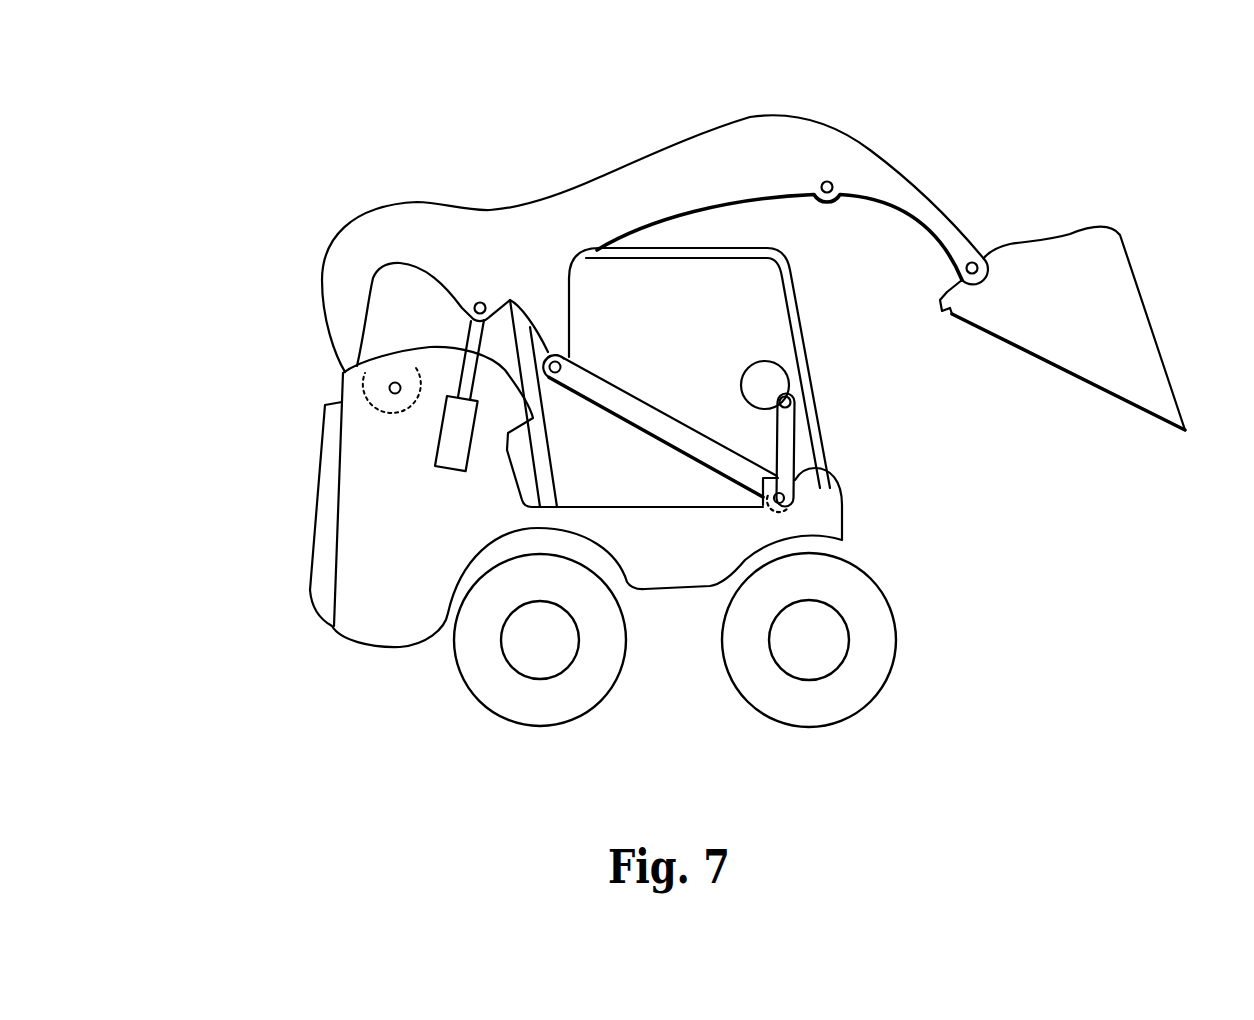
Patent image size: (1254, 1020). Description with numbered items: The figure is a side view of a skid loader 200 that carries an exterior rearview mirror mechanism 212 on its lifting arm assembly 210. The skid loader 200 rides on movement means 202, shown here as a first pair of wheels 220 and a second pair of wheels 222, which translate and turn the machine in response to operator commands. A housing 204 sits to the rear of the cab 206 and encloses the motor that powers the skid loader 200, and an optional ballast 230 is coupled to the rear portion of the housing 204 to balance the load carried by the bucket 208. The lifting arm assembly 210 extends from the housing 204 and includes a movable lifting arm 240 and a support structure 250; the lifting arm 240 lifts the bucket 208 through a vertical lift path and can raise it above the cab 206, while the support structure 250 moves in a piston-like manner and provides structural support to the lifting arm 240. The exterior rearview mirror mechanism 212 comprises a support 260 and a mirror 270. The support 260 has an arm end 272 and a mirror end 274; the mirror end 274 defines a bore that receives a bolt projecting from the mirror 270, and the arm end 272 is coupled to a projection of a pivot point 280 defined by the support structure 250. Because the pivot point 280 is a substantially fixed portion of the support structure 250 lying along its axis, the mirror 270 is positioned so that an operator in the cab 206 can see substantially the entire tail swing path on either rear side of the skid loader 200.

The skid loader 200 is at (178, 318).
The movement means 202 is at (660, 750).
The housing 204 is at (338, 374).
The cab 206 is at (808, 320).
The bucket 208 is at (1160, 366).
The lifting arm assembly 210 is at (590, 339).
The exterior rearview mirror mechanism 212 is at (710, 383).
The first pair of wheels 220 is at (478, 685).
The second pair of wheels 222 is at (884, 650).
The ballast 230 is at (323, 512).
The lifting arm 240 is at (717, 138).
The support structure 250 is at (618, 408).
The support 260 is at (796, 446).
The mirror 270 is at (775, 372).
The arm end 272 is at (797, 500).
The mirror end 274 is at (797, 396).
The pivot point 280 is at (762, 499).